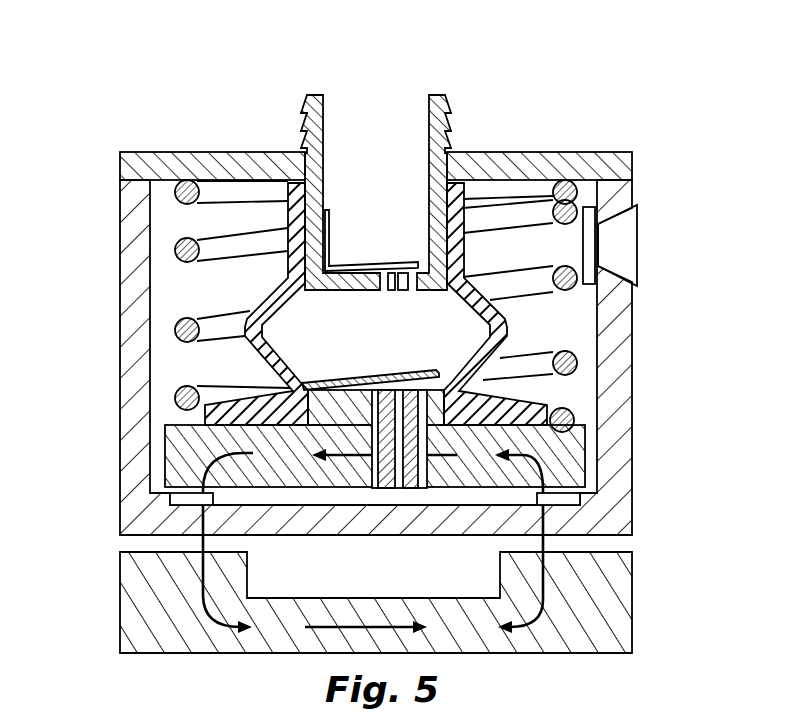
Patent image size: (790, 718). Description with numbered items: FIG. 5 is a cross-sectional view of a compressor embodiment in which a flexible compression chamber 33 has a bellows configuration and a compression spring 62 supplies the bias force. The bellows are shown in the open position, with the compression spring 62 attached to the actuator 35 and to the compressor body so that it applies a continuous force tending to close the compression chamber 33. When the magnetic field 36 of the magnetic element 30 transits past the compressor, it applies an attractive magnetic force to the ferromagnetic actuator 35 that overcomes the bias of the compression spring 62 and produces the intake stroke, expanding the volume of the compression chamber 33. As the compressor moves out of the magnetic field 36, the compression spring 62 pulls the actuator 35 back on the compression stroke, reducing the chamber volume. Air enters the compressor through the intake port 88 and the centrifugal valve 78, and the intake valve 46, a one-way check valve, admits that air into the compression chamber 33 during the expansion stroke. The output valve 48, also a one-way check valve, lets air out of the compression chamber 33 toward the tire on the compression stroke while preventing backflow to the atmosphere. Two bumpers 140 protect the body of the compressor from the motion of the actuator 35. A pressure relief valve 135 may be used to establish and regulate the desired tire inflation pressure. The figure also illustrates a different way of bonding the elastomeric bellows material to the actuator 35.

The magnetic element 30 is at (613, 595).
The flexible compression chamber 33 is at (253, 357).
The actuator 35 is at (577, 467).
The magnetic field 36 is at (175, 578).
The intake valve 46 is at (390, 383).
The output valve 48 is at (383, 265).
The compression spring 62 is at (177, 246).
The centrifugal valve 78 is at (625, 240).
The intake port 88 is at (612, 268).
The pressure relief valve 135 is at (302, 110).
The bumpers 140 is at (170, 494).